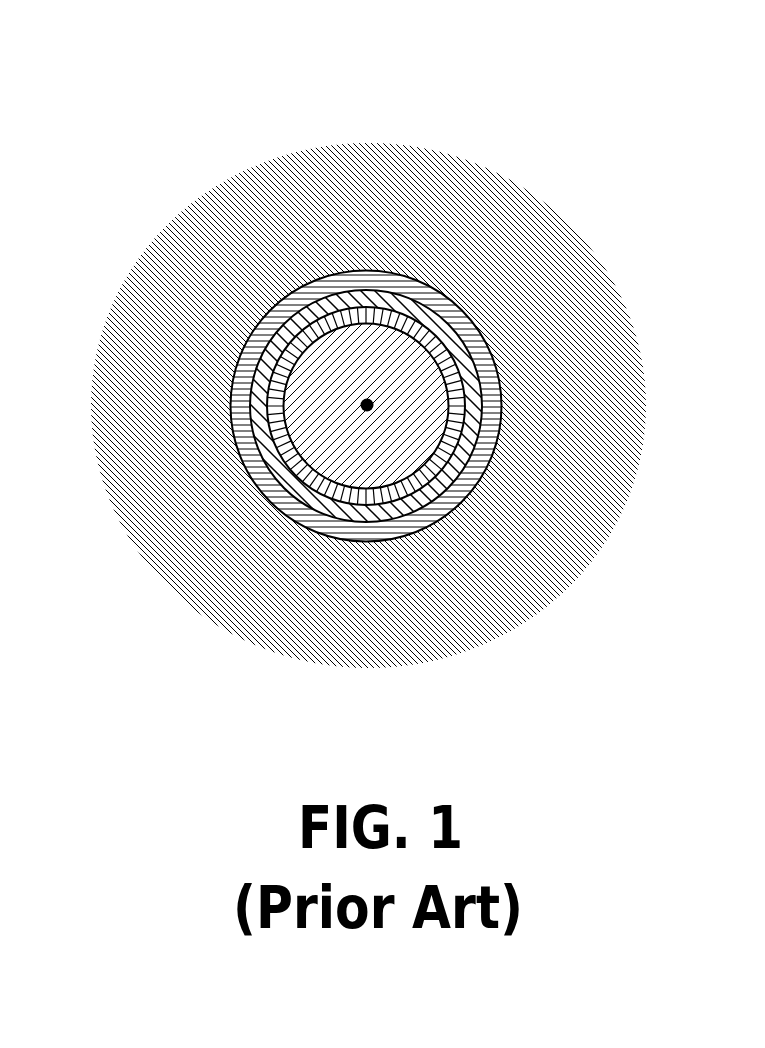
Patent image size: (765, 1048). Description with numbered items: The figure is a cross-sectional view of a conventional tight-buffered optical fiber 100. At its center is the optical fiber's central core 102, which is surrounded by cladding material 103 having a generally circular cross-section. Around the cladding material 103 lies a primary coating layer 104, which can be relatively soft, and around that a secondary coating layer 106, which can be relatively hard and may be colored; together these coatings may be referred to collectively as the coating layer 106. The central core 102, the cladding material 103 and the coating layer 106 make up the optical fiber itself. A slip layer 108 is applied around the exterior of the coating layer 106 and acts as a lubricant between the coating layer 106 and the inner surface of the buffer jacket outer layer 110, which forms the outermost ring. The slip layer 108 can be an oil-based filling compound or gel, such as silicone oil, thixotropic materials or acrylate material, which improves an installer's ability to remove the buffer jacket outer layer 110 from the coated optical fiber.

The tight-buffered optical fiber 100 is at (592, 50).
The central core 102 is at (427, 283).
The cladding material 103 is at (352, 391).
The primary coating layer 104 is at (440, 392).
The secondary coating layer 106 is at (445, 357).
The slip layer 108 is at (362, 387).
The buffer jacket outer layer 110 is at (450, 527).